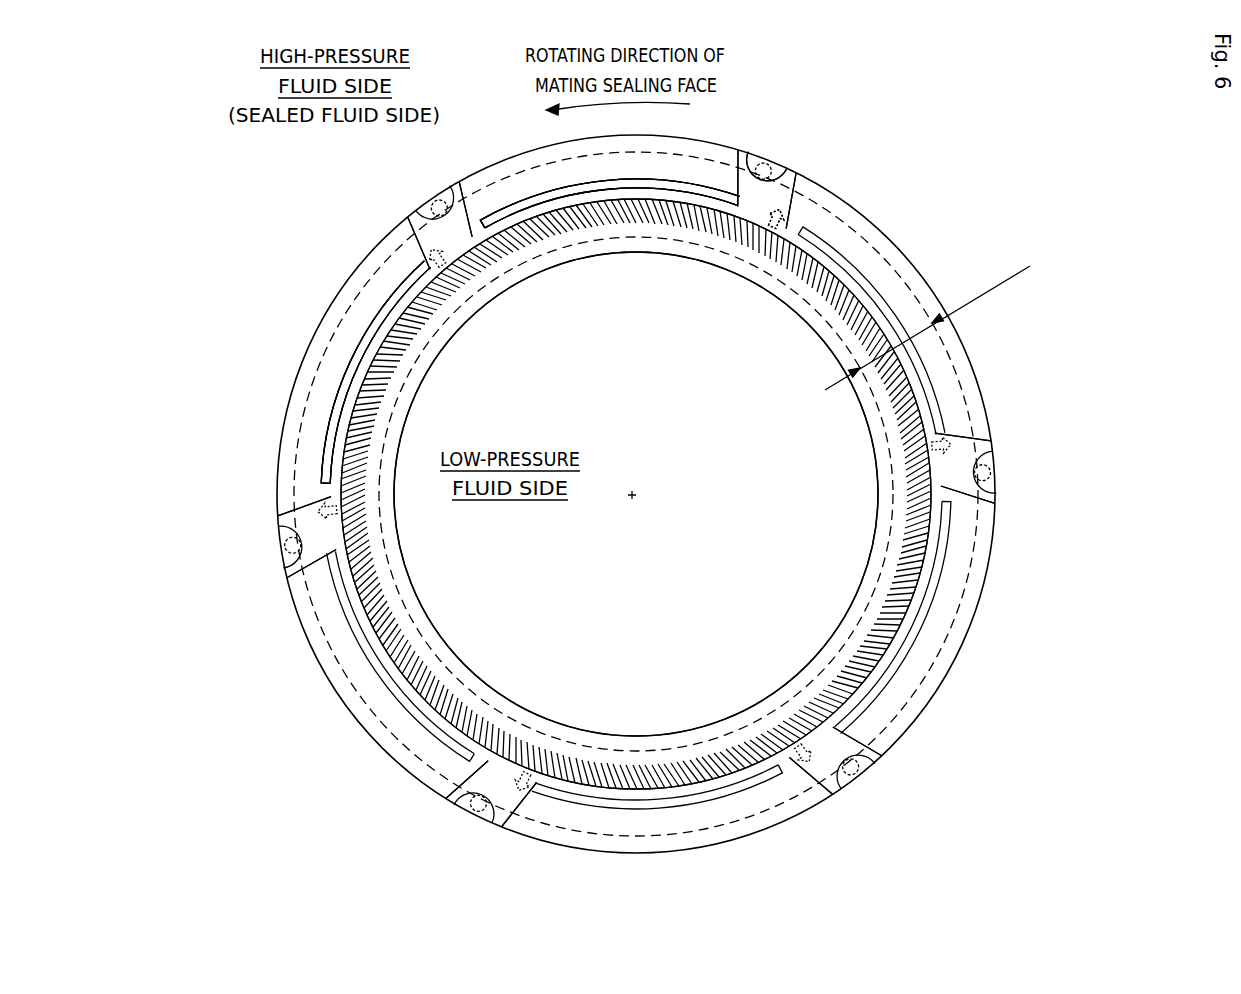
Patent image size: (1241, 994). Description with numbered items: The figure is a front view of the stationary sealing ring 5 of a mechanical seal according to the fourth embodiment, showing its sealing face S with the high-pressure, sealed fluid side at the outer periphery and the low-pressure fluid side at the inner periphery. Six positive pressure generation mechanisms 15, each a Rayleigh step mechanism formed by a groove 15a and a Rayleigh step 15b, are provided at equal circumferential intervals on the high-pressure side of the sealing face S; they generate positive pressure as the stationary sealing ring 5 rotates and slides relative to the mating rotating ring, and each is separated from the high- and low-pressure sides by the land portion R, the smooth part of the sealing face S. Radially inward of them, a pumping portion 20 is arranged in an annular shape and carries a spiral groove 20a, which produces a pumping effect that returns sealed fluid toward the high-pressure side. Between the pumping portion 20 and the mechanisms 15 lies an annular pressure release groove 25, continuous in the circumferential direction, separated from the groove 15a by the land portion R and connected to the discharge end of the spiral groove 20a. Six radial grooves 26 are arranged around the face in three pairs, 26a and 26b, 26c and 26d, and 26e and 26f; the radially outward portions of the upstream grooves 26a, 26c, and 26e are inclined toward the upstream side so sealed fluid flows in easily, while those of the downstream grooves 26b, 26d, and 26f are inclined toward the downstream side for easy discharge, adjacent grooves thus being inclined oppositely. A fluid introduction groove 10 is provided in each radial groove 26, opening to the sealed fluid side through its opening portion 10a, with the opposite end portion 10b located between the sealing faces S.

The stationary sealing ring 5 is at (526, 146).
The fluid introduction groove 10 is at (760, 168).
The opening portion 10a is at (765, 168).
The end portion 10b is at (783, 230).
The positive pressure generation mechanism 15 is at (666, 166).
The groove 15a is at (640, 178).
The Rayleigh step 15b is at (538, 208).
The pumping portion 20 is at (834, 322).
The spiral groove 20a is at (787, 278).
The pressure release groove 25 is at (452, 290).
The radial groove 26 is at (636, 490).
The radial groove 26a is at (988, 438).
The radial groove 26b is at (763, 202).
The radial groove 26c is at (397, 255).
The radial groove 26d is at (275, 507).
The radial groove 26e is at (477, 783).
The radial groove 26f is at (832, 752).
The land portion R is at (870, 258).
The sealing face S is at (958, 336).